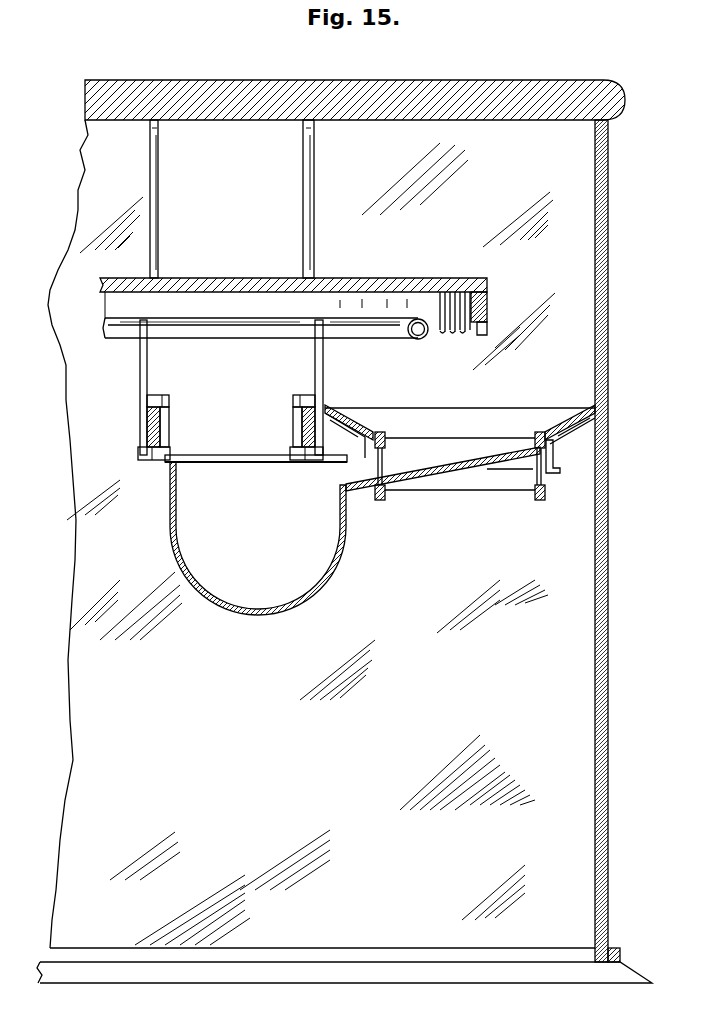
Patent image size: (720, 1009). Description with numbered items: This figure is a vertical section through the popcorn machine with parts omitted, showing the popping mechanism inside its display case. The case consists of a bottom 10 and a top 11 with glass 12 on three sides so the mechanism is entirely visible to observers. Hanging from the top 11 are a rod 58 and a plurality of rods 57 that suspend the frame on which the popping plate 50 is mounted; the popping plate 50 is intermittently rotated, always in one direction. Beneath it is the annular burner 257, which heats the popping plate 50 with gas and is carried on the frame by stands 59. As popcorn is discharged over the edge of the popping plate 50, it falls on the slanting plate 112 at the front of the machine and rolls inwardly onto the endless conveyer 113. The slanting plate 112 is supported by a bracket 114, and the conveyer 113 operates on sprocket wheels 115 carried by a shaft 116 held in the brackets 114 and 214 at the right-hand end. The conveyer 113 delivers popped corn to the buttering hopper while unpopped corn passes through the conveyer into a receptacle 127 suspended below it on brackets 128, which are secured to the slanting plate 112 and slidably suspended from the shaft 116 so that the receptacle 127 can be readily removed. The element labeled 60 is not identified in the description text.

The bottom 10 is at (340, 950).
The top 11 is at (452, 97).
The glass 12 is at (608, 692).
The popping plate 50 is at (366, 288).
The rods 57 is at (157, 198).
The rod 58 is at (306, 228).
The stands 59 is at (143, 383).
The corrugated member 60 is at (488, 331).
The slanting plate 112 is at (580, 431).
The endless conveyer 113 is at (483, 441).
The bracket 114 is at (362, 477).
The sprocket wheels 115 is at (546, 473).
The shaft 116 is at (230, 457).
The receptacle 127 is at (322, 607).
The brackets 128 is at (508, 471).
The bracket 214 is at (554, 453).
The annular burner 257 is at (237, 334).